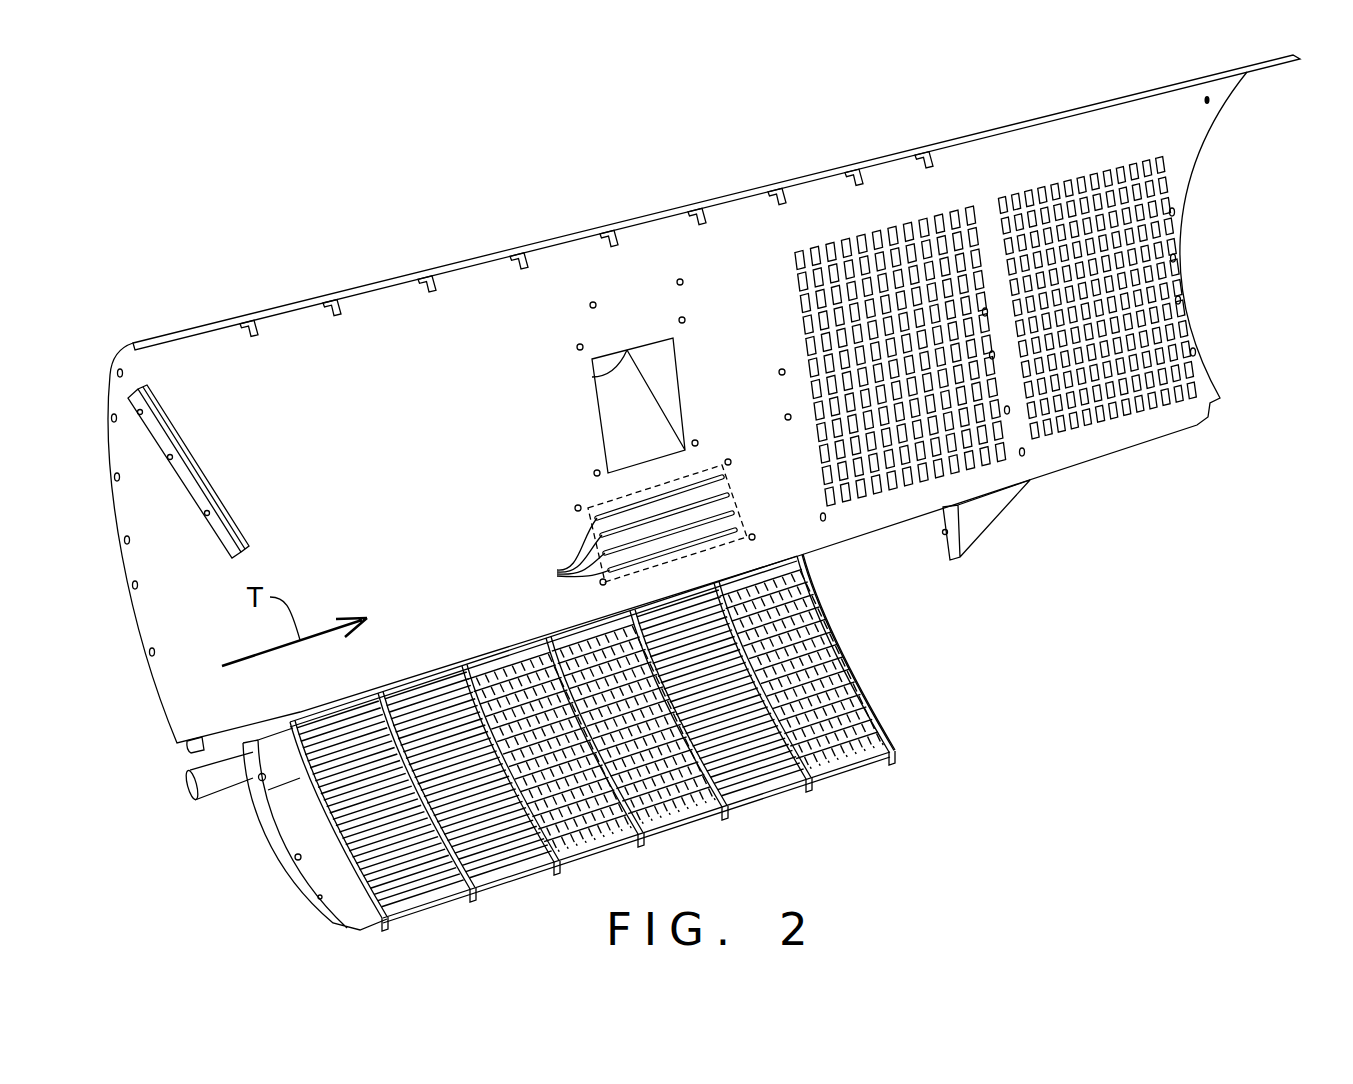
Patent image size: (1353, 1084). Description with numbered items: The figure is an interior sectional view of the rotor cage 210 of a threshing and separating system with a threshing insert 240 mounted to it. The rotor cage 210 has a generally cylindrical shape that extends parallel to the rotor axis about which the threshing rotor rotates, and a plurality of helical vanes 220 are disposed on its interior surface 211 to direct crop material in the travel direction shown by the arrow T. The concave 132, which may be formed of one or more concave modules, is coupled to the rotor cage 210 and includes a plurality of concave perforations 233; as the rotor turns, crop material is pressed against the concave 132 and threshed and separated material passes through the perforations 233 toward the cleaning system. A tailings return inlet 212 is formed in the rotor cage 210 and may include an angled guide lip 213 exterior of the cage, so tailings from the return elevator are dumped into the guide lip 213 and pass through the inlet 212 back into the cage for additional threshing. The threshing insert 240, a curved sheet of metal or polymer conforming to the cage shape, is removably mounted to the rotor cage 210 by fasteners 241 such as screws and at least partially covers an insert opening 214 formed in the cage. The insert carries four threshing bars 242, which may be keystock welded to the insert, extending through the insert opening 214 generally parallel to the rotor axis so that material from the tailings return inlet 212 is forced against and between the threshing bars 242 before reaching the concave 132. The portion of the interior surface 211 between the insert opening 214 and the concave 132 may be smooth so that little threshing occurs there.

The rotor cage 210 is at (467, 258).
The interior surface 211 is at (760, 309).
The tailings return inlet 212 is at (641, 343).
The guide lip 213 is at (610, 372).
The insert opening 214 is at (600, 505).
The helical vanes 220 is at (333, 313).
The threshing insert 240 is at (708, 457).
The fasteners 241 is at (732, 462).
The threshing bars 242 is at (558, 572).
The concave 132 is at (855, 653).
The concave perforations 233 is at (556, 775).